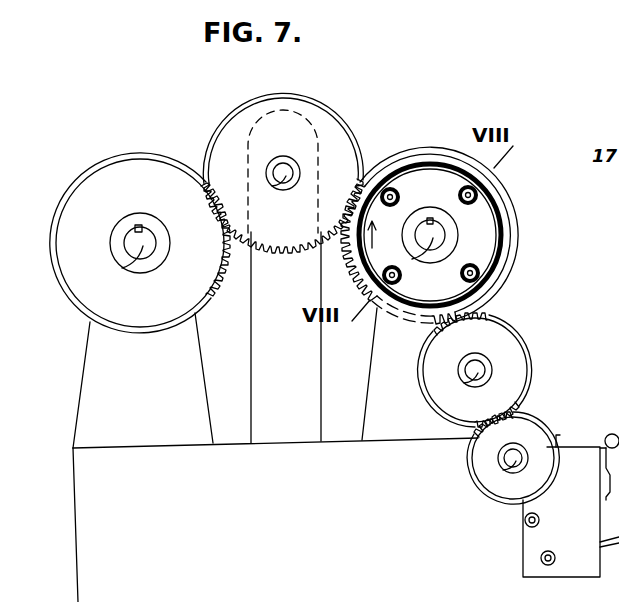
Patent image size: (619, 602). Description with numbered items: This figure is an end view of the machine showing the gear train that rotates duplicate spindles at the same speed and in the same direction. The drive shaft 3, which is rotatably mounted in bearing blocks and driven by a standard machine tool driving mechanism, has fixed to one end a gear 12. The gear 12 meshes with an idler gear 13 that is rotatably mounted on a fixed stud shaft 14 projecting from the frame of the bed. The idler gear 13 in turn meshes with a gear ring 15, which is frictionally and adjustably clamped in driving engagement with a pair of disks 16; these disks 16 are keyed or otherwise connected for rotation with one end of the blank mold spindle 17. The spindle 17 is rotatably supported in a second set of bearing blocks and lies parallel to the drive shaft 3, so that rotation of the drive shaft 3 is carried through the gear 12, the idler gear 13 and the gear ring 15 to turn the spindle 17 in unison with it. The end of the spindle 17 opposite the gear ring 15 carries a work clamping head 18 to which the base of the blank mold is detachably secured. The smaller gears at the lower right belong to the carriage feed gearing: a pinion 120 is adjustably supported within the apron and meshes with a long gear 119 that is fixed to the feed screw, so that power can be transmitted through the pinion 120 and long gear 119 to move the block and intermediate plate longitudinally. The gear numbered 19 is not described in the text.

The drive shaft 3 is at (132, 247).
The gear 12 is at (83, 193).
The idler gear 13 is at (225, 154).
The stud shaft 14 is at (283, 173).
The gear ring 15 is at (410, 150).
The disks 16 is at (487, 254).
The blank mold spindle 17 is at (430, 235).
The work clamping head 18 is at (518, 236).
The drive pinion 19 is at (513, 458).
The pinion 120 is at (560, 518).
The long gear 119 is at (603, 518).